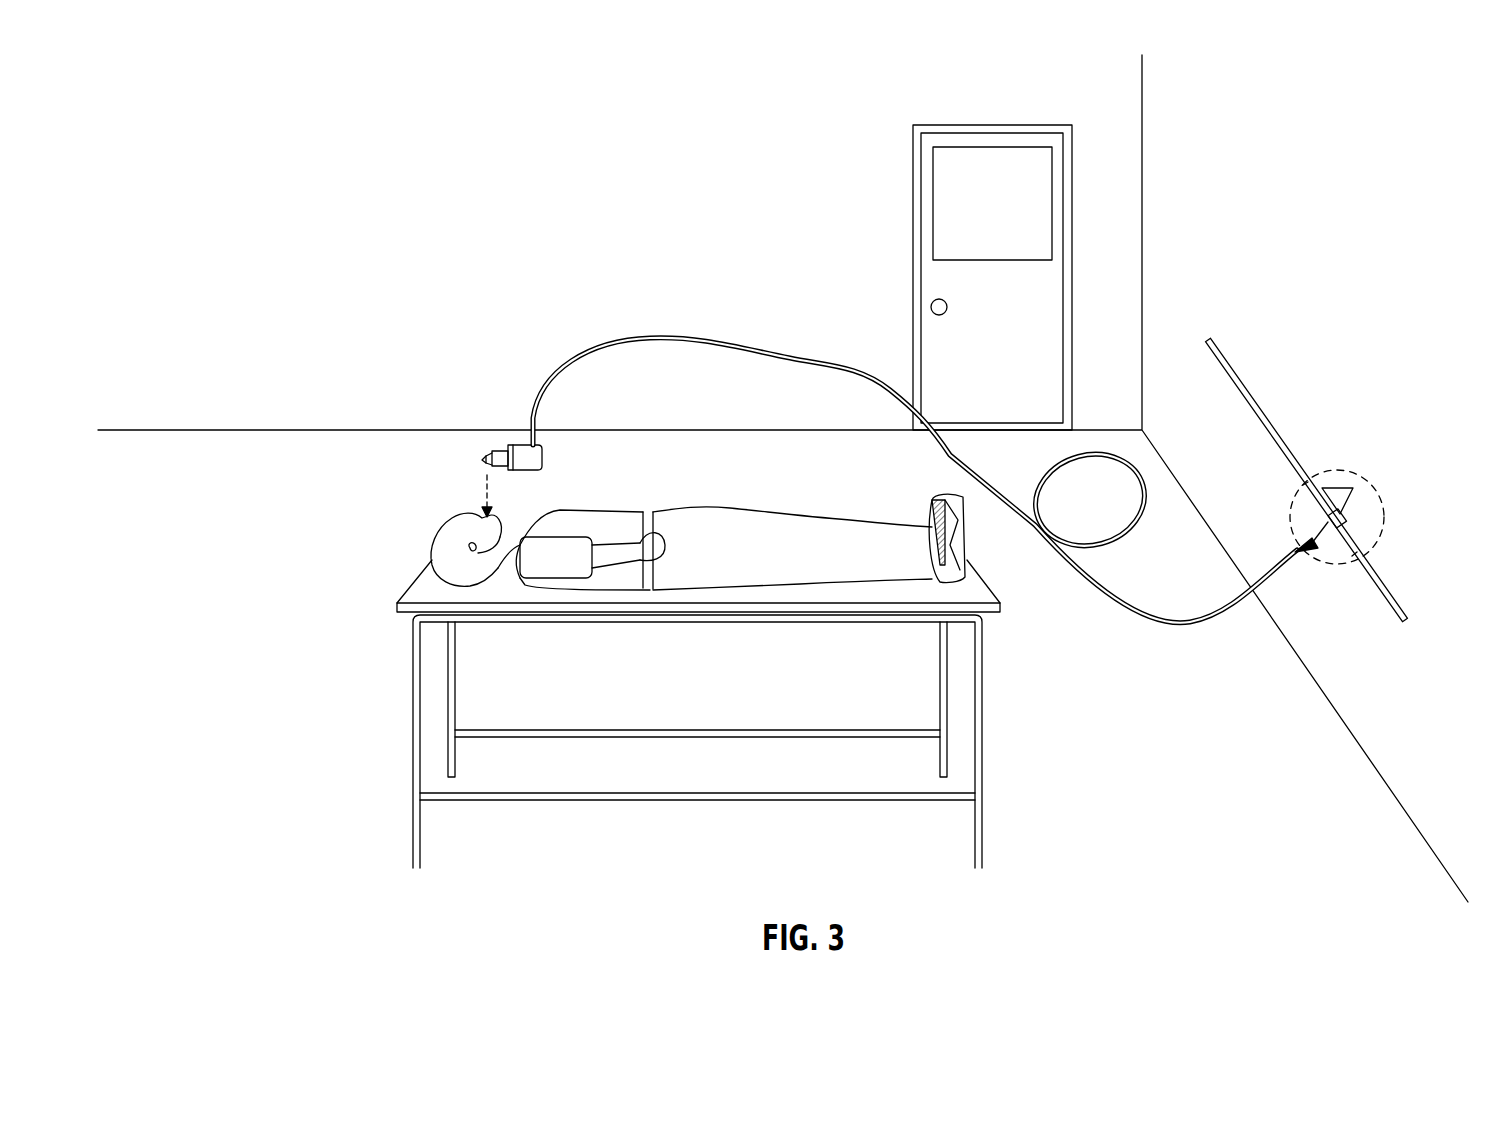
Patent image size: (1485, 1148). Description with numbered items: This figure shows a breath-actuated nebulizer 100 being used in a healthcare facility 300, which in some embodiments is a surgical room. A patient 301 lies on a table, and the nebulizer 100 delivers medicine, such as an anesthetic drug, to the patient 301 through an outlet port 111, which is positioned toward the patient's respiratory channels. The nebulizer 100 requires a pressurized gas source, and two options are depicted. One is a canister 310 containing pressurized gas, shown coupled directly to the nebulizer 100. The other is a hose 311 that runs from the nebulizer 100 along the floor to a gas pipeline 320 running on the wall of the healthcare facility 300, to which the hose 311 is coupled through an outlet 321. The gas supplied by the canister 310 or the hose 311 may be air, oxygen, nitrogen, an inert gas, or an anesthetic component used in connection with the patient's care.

The healthcare facility 300 is at (422, 248).
The breath-actuated nebulizer 100 is at (502, 447).
The outlet port 111 is at (484, 462).
The patient 301 is at (455, 518).
The canister 310 is at (542, 463).
The hose 311 is at (1123, 610).
The gas pipeline 320 is at (1265, 408).
The outlet 321 is at (1364, 478).